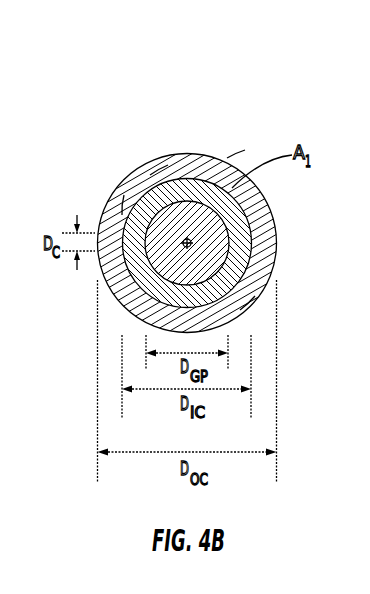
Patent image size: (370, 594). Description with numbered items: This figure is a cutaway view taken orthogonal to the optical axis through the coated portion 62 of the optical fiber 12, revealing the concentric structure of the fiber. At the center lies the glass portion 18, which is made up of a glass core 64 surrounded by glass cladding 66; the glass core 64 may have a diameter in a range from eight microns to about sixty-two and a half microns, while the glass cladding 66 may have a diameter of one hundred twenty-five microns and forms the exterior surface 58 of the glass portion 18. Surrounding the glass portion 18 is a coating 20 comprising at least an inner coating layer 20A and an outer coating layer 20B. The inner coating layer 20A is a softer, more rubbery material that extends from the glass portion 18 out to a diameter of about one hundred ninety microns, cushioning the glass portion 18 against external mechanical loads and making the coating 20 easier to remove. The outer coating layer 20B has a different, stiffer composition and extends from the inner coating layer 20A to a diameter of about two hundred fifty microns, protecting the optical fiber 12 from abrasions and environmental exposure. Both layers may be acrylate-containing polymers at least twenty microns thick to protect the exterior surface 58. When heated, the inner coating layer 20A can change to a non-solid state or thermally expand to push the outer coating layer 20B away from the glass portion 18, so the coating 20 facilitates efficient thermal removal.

The optical fiber 12 is at (200, 154).
The glass portion 18 is at (114, 216).
The coating 20 is at (104, 102).
The inner coating layer 20A is at (147, 232).
The outer coating layer 20B is at (158, 166).
The exterior surface 58 is at (232, 225).
The coated portion 62 is at (226, 156).
The glass core 64 is at (191, 245).
The glass cladding 66 is at (257, 296).